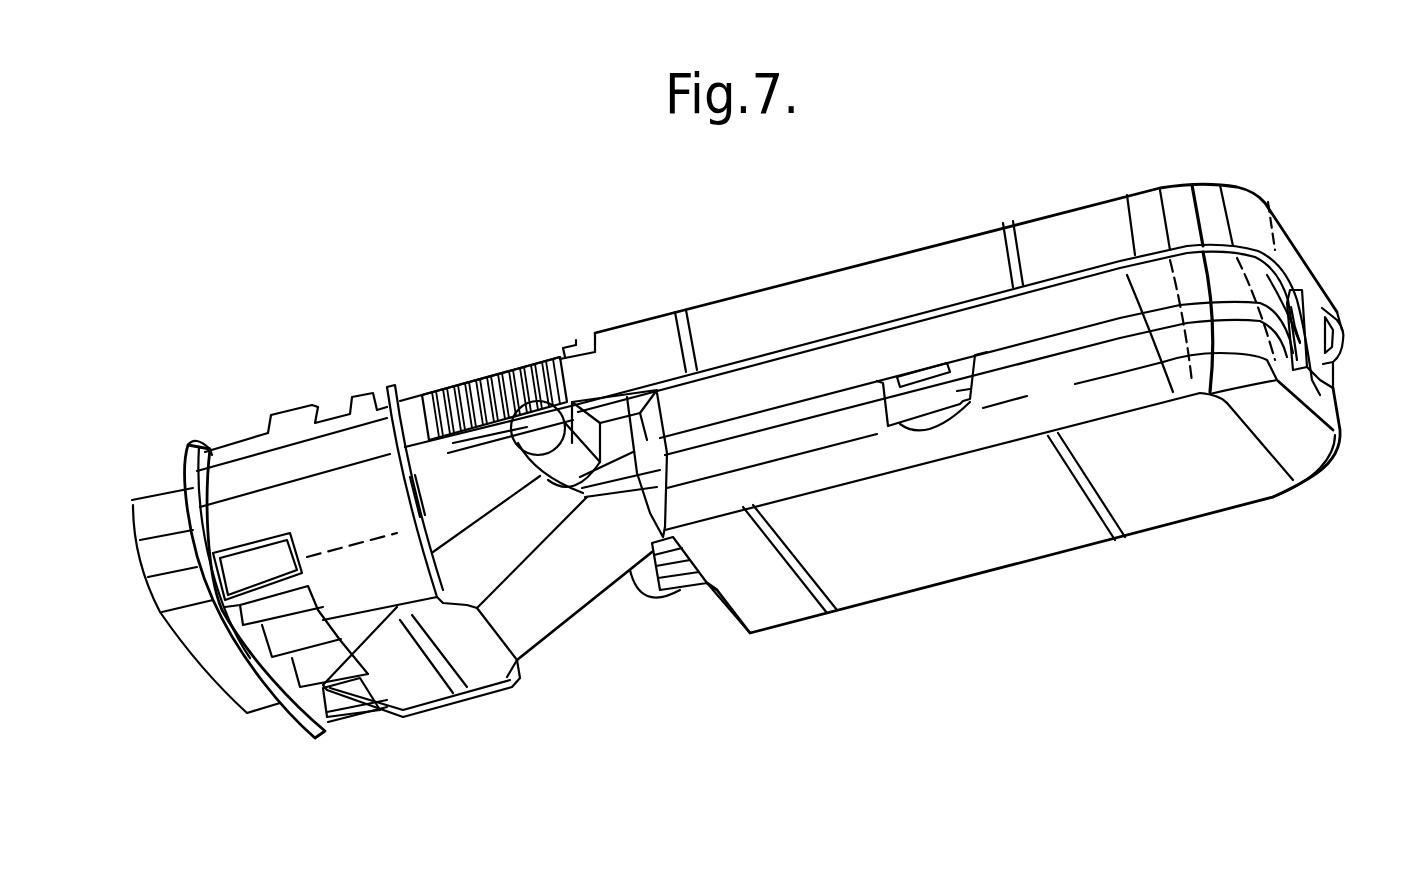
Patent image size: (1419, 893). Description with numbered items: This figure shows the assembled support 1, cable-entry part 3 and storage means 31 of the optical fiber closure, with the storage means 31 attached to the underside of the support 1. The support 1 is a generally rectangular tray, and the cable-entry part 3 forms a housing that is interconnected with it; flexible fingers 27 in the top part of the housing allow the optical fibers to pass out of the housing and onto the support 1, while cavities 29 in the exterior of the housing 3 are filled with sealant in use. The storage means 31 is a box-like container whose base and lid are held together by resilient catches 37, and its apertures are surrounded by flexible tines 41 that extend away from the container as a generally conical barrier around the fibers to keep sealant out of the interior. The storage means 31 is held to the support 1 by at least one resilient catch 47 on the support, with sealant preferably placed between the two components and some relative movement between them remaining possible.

The support 1 is at (826, 271).
The cable-entry part 3 is at (453, 712).
The flexible fingers 27 is at (454, 422).
The cavities 29 is at (360, 688).
The storage means 31 is at (945, 585).
The resilient catches 37 is at (980, 388).
The flexible tines 41 is at (694, 573).
The resilient catch 47 is at (1323, 365).